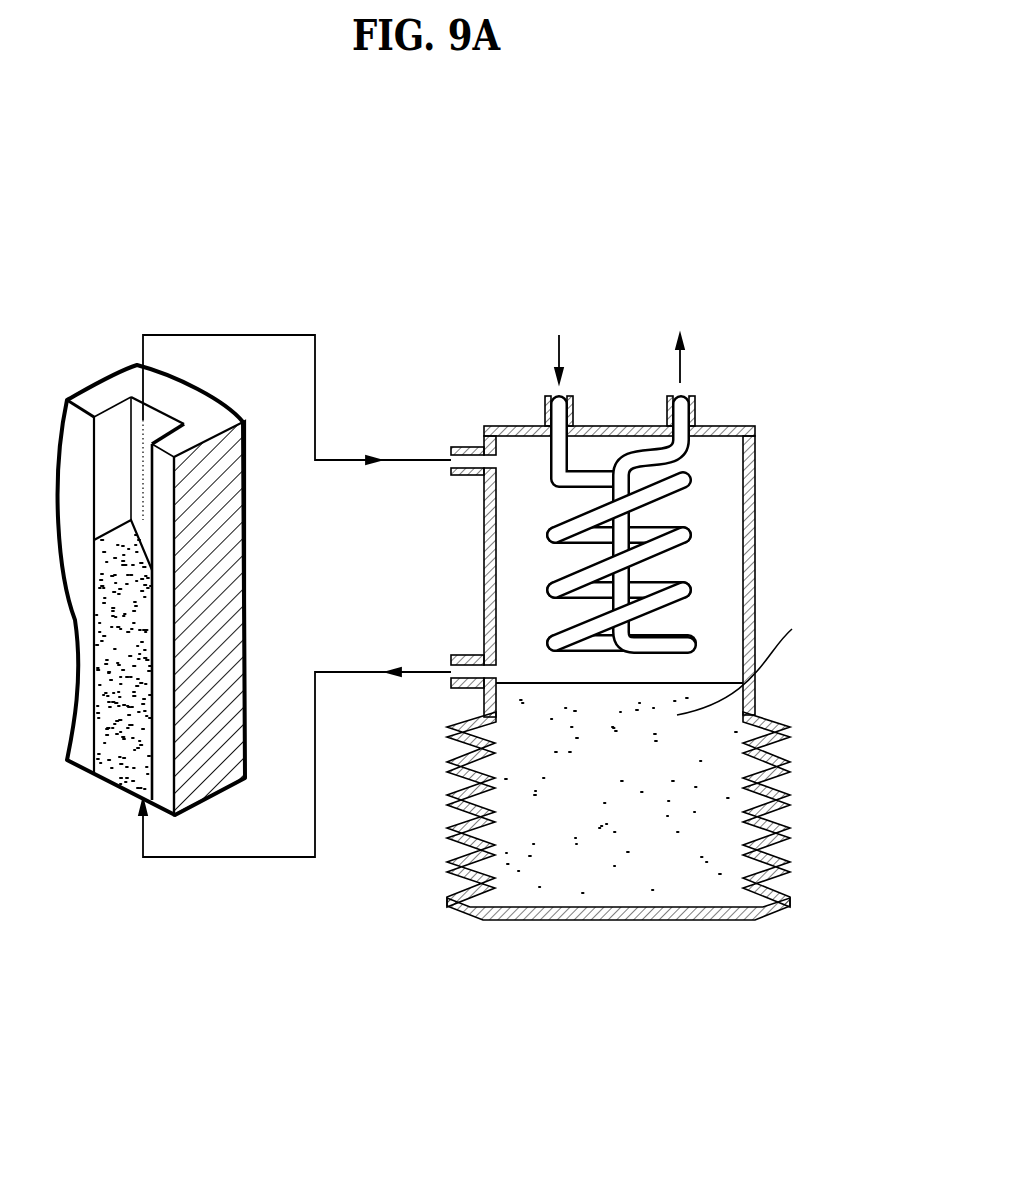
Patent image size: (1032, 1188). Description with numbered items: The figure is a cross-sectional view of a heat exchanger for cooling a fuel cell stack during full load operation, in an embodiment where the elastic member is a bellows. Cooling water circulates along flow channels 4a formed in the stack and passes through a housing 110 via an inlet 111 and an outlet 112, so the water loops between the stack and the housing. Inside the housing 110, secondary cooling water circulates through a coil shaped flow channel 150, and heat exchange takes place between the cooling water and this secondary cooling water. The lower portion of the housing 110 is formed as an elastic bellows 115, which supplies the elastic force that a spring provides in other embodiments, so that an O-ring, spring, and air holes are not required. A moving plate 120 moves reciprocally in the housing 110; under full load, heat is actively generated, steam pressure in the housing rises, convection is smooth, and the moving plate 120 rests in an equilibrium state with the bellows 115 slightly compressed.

The flow channels 4a is at (117, 412).
The housing 110 is at (483, 553).
The inlet 111 is at (460, 462).
The outlet 112 is at (450, 662).
The coil shaped flow channel 150 is at (688, 481).
The elastic bellows 115 is at (791, 767).
The moving plate 120 is at (606, 921).